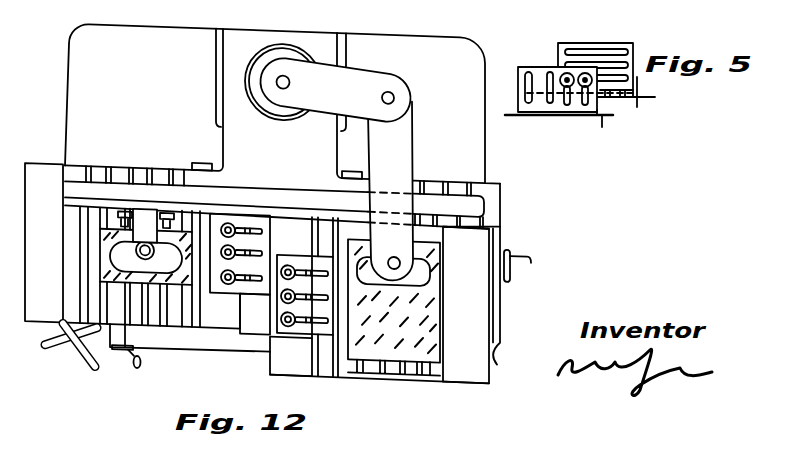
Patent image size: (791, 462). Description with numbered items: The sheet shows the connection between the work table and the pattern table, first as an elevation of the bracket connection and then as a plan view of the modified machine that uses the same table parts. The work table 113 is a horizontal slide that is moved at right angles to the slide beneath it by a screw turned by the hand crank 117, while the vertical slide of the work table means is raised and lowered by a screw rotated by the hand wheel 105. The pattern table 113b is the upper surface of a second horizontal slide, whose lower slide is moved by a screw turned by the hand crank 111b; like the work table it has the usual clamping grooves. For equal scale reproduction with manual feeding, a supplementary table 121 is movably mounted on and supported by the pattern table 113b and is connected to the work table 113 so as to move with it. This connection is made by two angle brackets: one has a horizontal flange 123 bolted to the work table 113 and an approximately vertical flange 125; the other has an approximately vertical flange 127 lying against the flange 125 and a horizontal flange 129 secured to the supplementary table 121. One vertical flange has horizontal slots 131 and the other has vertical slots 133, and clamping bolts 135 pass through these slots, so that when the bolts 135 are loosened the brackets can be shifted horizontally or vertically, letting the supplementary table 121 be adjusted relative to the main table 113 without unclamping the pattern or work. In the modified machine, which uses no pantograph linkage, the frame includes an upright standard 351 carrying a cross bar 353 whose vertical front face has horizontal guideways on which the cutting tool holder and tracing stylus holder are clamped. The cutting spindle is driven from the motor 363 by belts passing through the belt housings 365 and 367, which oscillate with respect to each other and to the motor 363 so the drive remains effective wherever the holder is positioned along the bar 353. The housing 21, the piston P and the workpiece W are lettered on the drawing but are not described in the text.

In FIG. 12, the housing 21 is at (264, 109).
In FIG. 12, the work table 113 is at (43, 186).
In FIG. 5, the work table 113 is at (655, 97).
In FIG. 12, the pattern table 113b is at (500, 199).
In FIG. 12, the hand crank 111b is at (533, 269).
In FIG. 12, the upright standard 351 is at (235, 144).
In FIG. 12, the cross bar 353 is at (303, 197).
In FIG. 12, the motor 363 is at (277, 112).
In FIG. 12, the belt housing 365 is at (356, 80).
In FIG. 12, the belt housing 367 is at (408, 136).
In FIG. 12, the vertical flange 125 is at (270, 240).
In FIG. 5, the vertical flange 125 is at (644, 104).
In FIG. 12, the clamping bolts 135 is at (305, 285).
In FIG. 5, the clamping bolts 135 is at (563, 74).
In FIG. 12, the horizontal flange 123 is at (272, 328).
In FIG. 12, the vertical flange 127 is at (190, 339).
In FIG. 5, the vertical flange 127 is at (575, 107).
In FIG. 12, the horizontal flange 129 is at (291, 356).
In FIG. 5, the horizontal flange 129 is at (559, 132).
In FIG. 12, the supplementary table 121 is at (477, 371).
In FIG. 5, the supplementary table 121 is at (612, 130).
In FIG. 5, the horizontal slots 131 is at (563, 66).
In FIG. 5, the vertical slots 133 is at (520, 88).
In FIG. 12, the hand wheel 105 is at (80, 357).
In FIG. 12, the hand crank 117 is at (140, 368).
In FIG. 12, the piston P is at (192, 286).
In FIG. 12, the workpiece W is at (435, 308).